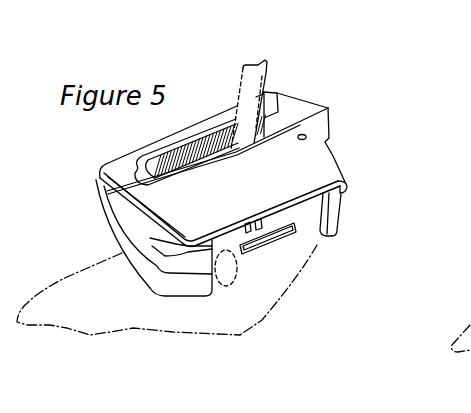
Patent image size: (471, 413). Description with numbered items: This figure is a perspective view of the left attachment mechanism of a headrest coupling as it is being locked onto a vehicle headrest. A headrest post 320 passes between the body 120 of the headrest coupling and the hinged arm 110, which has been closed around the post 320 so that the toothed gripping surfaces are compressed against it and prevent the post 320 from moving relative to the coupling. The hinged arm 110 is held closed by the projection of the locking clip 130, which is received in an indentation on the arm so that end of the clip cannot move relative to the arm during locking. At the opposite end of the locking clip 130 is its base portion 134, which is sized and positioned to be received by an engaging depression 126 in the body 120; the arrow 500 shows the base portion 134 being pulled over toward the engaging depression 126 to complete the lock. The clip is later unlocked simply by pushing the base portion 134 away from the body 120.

The hinged arm 110 is at (108, 166).
The body 120 is at (332, 156).
The engaging depression 126 is at (210, 237).
The locking clip 130 is at (123, 238).
The base portion 134 is at (183, 287).
The headrest post 320 is at (272, 75).
The arrow indicating pulling of the clip base 500 is at (215, 238).